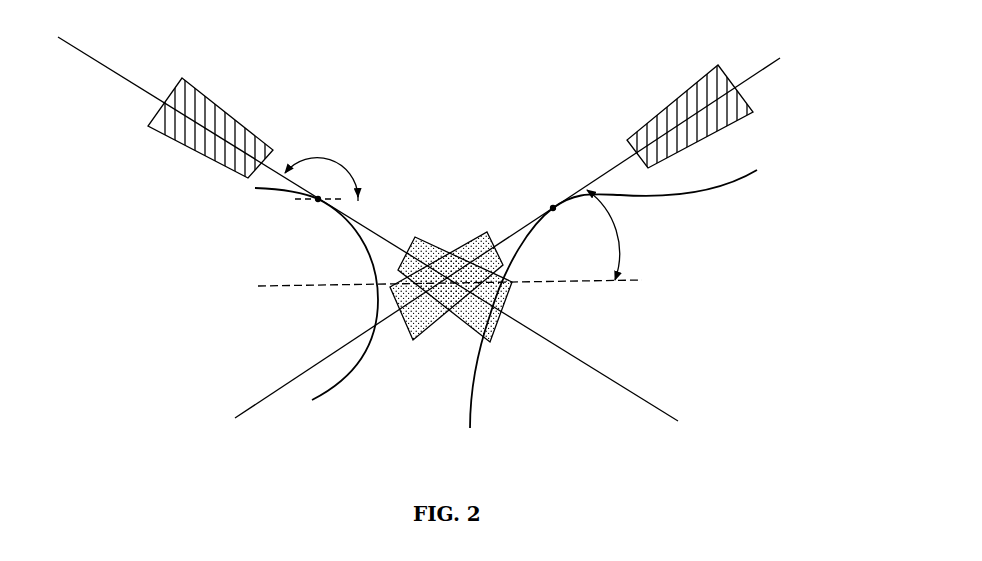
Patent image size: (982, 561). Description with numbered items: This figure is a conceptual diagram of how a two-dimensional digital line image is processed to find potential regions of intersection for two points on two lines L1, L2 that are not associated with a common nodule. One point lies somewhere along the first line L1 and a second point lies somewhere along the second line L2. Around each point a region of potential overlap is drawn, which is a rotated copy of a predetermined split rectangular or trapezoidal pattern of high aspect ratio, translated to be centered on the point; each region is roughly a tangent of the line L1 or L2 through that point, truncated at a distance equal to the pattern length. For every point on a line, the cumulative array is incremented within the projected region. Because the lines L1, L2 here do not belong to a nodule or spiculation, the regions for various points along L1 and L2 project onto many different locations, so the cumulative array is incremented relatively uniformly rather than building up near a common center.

The line L1 is at (355, 384).
The line L2 is at (483, 398).